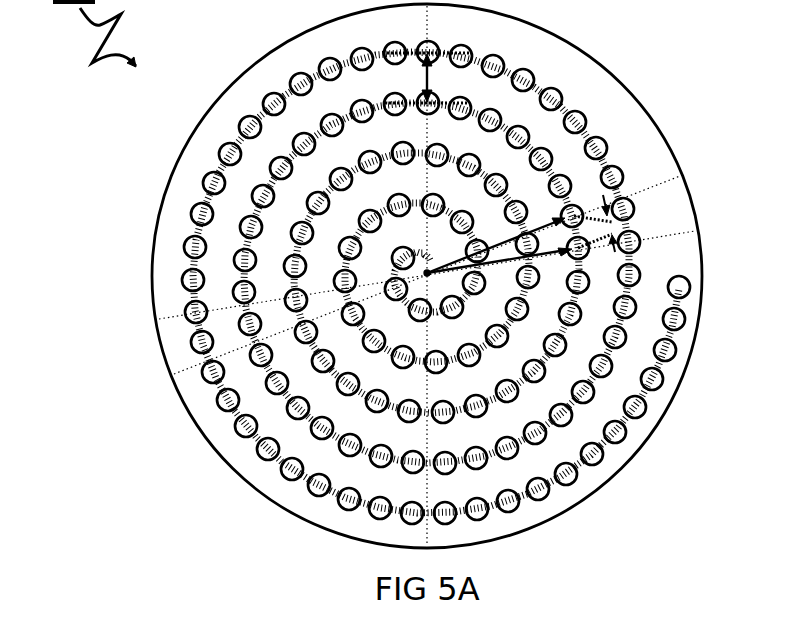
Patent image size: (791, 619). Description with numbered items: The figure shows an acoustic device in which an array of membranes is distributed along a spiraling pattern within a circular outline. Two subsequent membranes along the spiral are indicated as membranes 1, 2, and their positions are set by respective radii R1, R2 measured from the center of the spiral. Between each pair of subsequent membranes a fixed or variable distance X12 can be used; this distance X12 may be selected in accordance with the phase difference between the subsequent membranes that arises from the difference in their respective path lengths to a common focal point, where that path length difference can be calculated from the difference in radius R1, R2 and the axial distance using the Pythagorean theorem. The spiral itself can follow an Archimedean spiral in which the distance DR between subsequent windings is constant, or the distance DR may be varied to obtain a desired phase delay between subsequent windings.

The first circular element on spiral arm 1 is at (584, 256).
The second circular element on spiral arm 2 is at (573, 206).
The radius R1 is at (499, 261).
The radius R2 is at (496, 245).
The distance between subsequent membranes X12 is at (613, 223).
The distance between subsequent windings DR is at (426, 78).